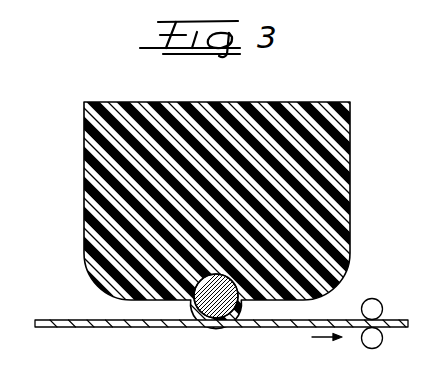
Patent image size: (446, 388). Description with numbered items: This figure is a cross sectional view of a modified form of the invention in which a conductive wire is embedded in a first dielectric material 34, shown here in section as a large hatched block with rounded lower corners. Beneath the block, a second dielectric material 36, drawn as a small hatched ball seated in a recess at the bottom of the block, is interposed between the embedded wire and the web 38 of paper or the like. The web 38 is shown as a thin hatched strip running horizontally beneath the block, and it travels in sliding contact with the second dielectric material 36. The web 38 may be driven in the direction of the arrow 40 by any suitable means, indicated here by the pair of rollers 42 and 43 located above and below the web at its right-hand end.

The first dielectric material 34 is at (343, 151).
The second dielectric material 36 is at (200, 317).
The web 38 is at (68, 327).
The arrow 40 is at (323, 337).
The driving means 42 is at (373, 298).
The driving means 43 is at (369, 349).